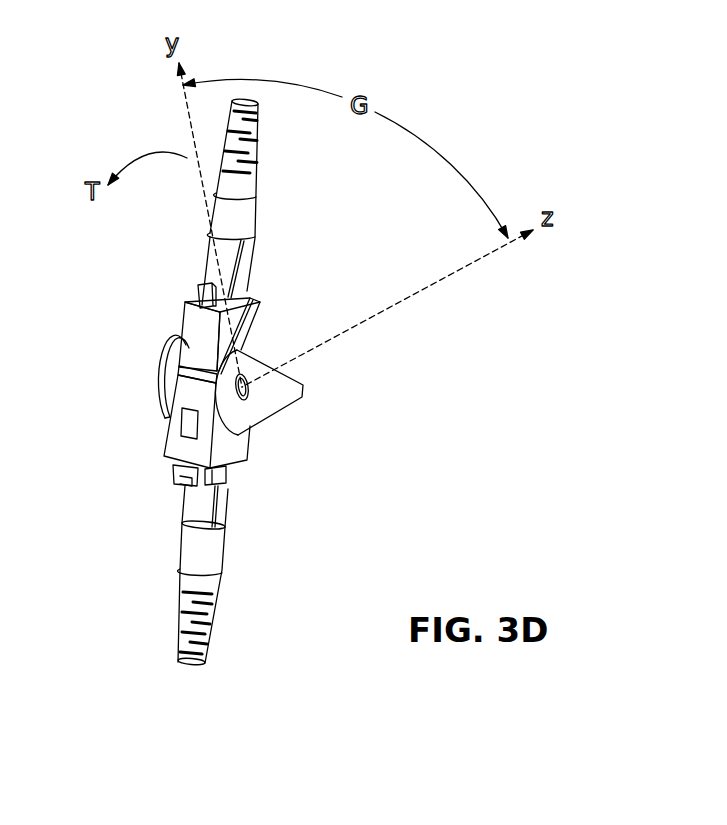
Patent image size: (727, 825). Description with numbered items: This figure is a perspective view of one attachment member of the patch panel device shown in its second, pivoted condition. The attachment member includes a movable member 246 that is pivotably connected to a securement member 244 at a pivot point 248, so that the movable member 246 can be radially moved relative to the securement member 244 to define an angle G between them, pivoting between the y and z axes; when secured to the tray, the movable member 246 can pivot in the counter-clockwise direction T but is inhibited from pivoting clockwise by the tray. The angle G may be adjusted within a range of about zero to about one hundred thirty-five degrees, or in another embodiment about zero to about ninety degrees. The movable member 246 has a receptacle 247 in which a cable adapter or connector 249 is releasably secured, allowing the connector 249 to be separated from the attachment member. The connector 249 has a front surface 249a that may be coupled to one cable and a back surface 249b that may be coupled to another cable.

The securement member 244 is at (257, 420).
The movable member 246 is at (256, 343).
The receptacle 247 is at (257, 328).
The pivot point 248 is at (253, 415).
The connector 249 is at (240, 443).
The front surface 249a is at (222, 470).
The back surface 249b is at (250, 300).